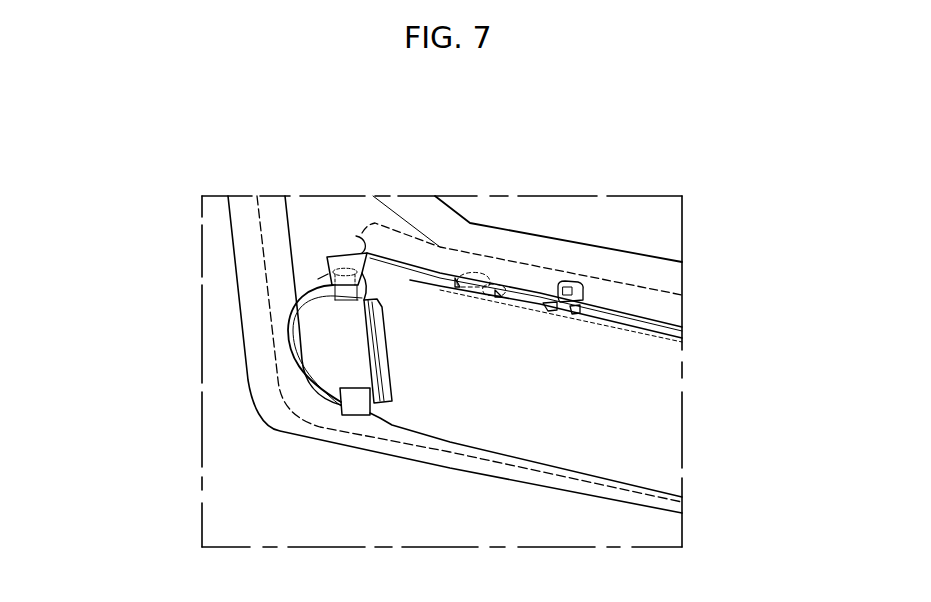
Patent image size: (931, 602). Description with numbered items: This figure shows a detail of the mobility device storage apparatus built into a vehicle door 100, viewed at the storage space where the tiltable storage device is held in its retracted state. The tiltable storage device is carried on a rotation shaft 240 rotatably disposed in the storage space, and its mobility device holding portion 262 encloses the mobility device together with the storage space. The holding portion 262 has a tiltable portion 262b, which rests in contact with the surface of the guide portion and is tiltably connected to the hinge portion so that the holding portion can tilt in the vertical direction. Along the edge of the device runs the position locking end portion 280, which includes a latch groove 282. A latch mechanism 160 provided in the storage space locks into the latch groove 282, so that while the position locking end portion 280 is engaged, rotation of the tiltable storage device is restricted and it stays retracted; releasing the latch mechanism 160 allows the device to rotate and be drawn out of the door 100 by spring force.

The door 100 is at (333, 210).
The latch mechanism 160 is at (577, 290).
The rotation shaft 240 is at (300, 292).
The mobility device holding portion 262 is at (667, 418).
The tiltable portion 262b is at (320, 333).
The position locking end portion 280 is at (594, 313).
The latch groove 282 is at (559, 285).